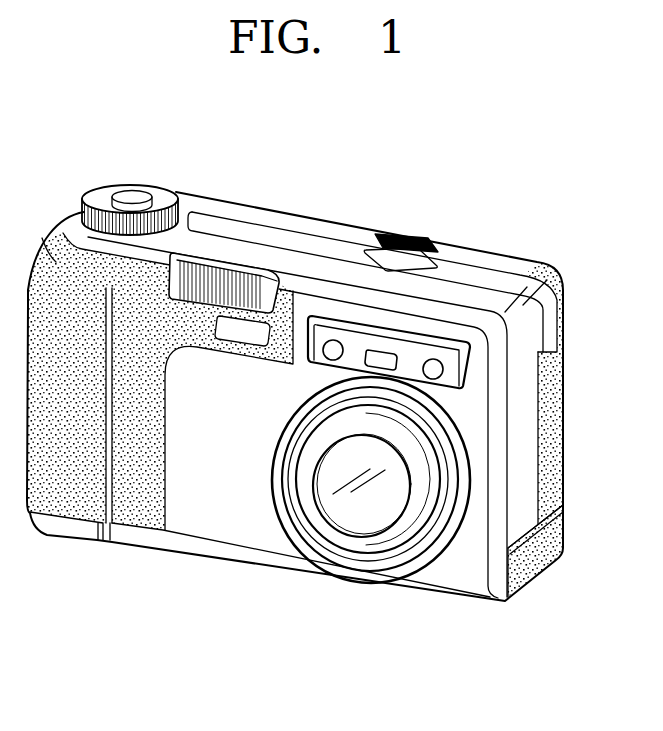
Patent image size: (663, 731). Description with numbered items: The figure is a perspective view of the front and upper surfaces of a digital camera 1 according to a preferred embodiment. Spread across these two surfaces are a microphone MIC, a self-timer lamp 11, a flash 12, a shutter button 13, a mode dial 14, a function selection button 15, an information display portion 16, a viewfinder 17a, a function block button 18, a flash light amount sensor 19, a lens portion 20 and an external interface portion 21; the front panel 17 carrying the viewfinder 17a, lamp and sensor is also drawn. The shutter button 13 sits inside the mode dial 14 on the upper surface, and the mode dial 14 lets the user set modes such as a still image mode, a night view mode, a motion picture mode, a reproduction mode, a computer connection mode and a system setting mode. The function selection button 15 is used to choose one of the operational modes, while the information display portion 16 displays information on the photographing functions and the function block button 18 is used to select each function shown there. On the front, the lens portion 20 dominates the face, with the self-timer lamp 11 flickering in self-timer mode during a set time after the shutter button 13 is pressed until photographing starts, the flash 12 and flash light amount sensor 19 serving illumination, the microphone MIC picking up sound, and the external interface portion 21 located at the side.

The digital camera 1 is at (224, 632).
The self-timer lamp 11 is at (334, 341).
The flash 12 is at (221, 276).
The shutter button 13 is at (131, 195).
The mode dial 14 is at (98, 199).
The function selection button 15 is at (394, 234).
The information display portion 16 is at (403, 260).
The front panel 17 is at (389, 352).
The viewfinder 17a is at (391, 353).
The function block button 18 is at (430, 244).
The flash light amount sensor 19 is at (443, 369).
The lens portion 20 is at (391, 488).
The external interface portion 21 is at (563, 533).
The microphone MIC is at (246, 331).